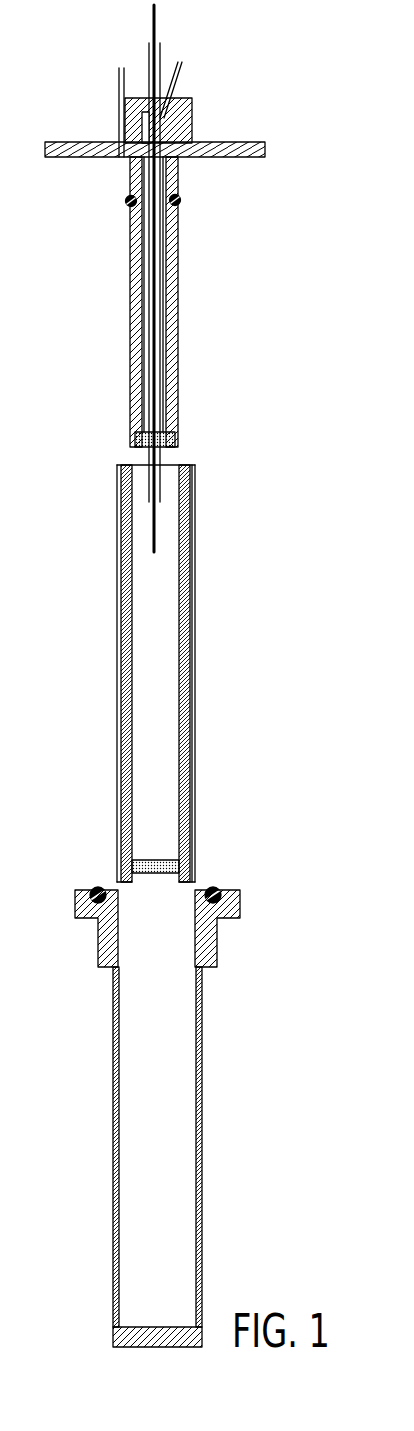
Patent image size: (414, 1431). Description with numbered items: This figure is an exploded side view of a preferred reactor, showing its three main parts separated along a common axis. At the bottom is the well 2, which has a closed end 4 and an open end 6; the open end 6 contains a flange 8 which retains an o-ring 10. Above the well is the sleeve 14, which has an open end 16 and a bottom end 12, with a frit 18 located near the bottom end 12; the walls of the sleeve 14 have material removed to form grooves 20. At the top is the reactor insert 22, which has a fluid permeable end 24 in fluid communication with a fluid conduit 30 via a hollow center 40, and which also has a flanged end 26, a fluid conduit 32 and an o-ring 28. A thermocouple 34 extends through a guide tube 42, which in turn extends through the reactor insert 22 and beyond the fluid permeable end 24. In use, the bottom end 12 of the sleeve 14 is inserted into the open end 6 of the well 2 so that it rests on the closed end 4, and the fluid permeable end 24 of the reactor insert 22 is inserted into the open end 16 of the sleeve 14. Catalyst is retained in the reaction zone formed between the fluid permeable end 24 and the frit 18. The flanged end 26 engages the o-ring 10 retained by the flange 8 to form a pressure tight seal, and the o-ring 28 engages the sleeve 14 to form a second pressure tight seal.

The well 2 is at (203, 1132).
The closed end 4 is at (118, 1348).
The open end 6 is at (158, 918).
The flange 8 is at (240, 907).
The o-ring 10 is at (217, 890).
The bottom end 12 is at (143, 873).
The sleeve 14 is at (200, 673).
The open end 16 is at (172, 478).
The frit 18 is at (122, 865).
The grooves 20 is at (193, 552).
The reactor insert 22 is at (175, 290).
The fluid permeable end 24 is at (176, 440).
The flanged end 26 is at (265, 143).
The o-ring 28 is at (181, 200).
The fluid conduit 30 is at (182, 77).
The fluid conduit 32 is at (118, 105).
The thermocouple 34 is at (153, 22).
The hollow center 40 is at (165, 360).
The guide tube 42 is at (162, 45).